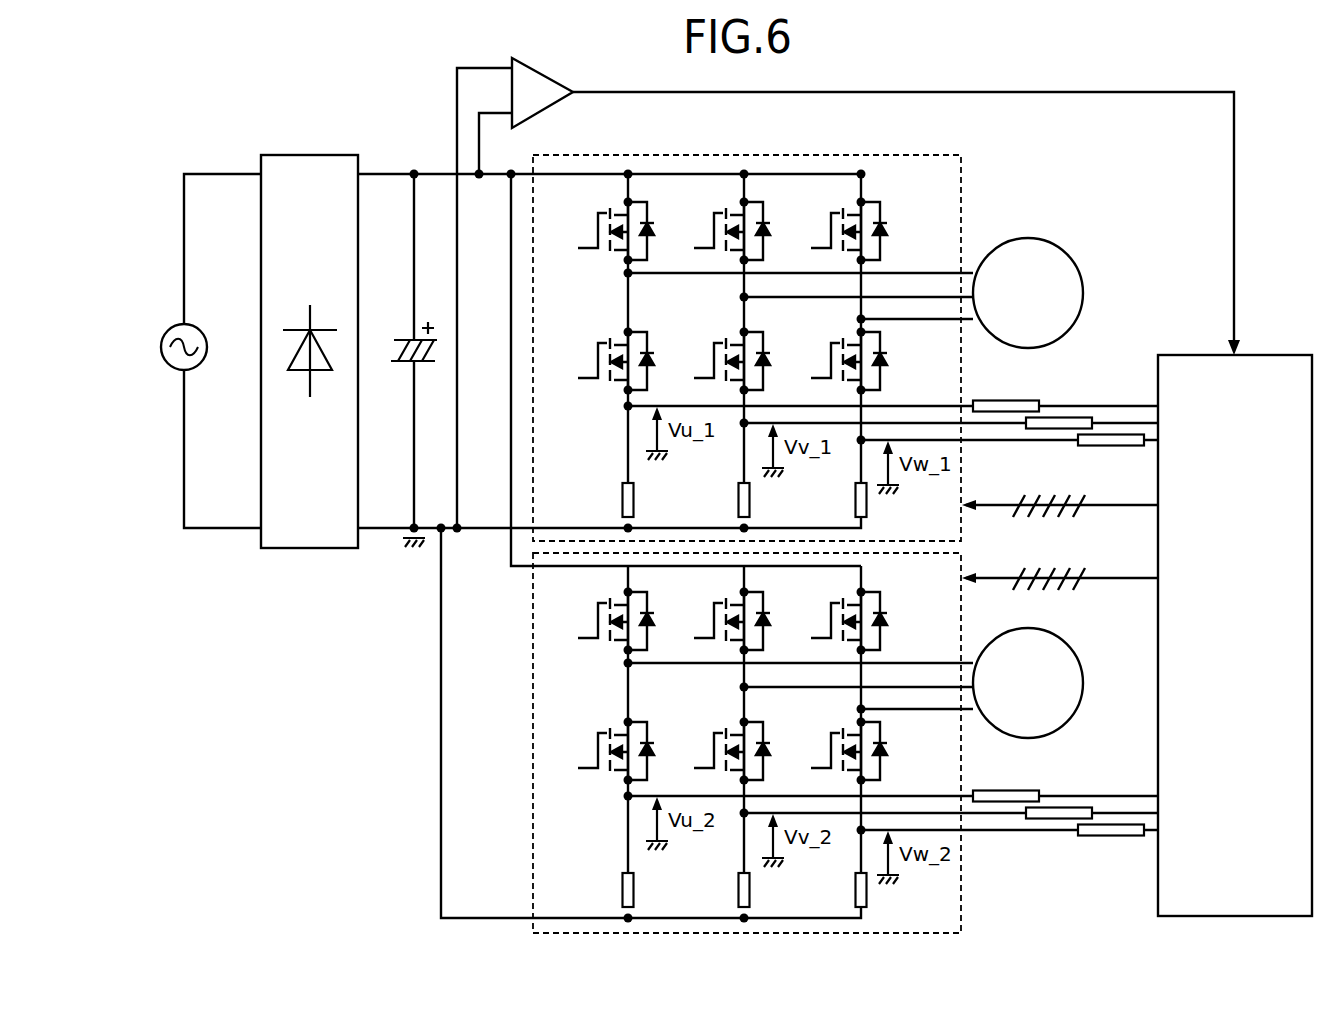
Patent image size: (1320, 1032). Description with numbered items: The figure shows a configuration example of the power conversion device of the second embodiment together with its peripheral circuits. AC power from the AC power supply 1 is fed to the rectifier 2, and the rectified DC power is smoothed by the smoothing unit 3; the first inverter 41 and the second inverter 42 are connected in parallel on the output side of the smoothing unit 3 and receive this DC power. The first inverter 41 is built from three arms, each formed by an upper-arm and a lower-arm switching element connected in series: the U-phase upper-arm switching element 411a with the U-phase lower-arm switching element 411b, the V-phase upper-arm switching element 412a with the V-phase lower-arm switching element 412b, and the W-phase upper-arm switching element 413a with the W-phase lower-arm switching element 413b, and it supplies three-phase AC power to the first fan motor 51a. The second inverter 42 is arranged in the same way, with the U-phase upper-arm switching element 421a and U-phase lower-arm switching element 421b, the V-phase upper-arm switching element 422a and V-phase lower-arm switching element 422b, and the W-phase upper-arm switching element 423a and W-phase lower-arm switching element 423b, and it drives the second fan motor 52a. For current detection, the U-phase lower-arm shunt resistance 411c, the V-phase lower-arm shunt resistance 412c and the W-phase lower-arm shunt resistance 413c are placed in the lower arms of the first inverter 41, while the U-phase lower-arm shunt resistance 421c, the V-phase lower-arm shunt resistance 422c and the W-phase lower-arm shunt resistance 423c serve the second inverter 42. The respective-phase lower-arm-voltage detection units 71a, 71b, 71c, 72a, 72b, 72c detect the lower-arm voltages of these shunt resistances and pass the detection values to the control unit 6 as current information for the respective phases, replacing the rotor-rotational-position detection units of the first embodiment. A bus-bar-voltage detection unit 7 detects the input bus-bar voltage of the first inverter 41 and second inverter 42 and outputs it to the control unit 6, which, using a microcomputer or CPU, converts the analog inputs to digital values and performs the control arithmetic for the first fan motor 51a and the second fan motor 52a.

The AC power supply 1 is at (171, 327).
The rectifier 2 is at (299, 155).
The smoothing unit 3 is at (396, 340).
The control unit 6 is at (1275, 340).
The bus-bar-voltage detection unit 7 is at (536, 76).
The first inverter 41 is at (556, 156).
The second inverter 42 is at (533, 621).
The U-phase upper-arm switching element 411a is at (599, 224).
The V-phase upper-arm switching element 412a is at (715, 224).
The W-phase upper-arm switching element 413a is at (832, 224).
The U-phase lower-arm switching element 411b is at (599, 354).
The V-phase lower-arm switching element 412b is at (715, 354).
The W-phase lower-arm switching element 413b is at (832, 354).
The U-phase lower-arm shunt resistance 411c is at (589, 500).
The V-phase lower-arm shunt resistance 412c is at (705, 500).
The W-phase lower-arm shunt resistance 413c is at (822, 500).
The U-phase upper-arm switching element 421a is at (599, 614).
The V-phase upper-arm switching element 422a is at (715, 614).
The W-phase upper-arm switching element 423a is at (832, 614).
The U-phase lower-arm switching element 421b is at (599, 744).
The V-phase lower-arm switching element 422b is at (715, 744).
The W-phase lower-arm switching element 423b is at (832, 744).
The U-phase lower-arm shunt resistance 421c is at (589, 890).
The V-phase lower-arm shunt resistance 422c is at (705, 890).
The W-phase lower-arm shunt resistance 423c is at (822, 890).
The first fan motor 51a is at (1034, 239).
The second fan motor 52a is at (1034, 629).
The U-phase lower-arm-voltage detection unit 71a is at (994, 378).
The V-phase lower-arm-voltage detection unit 71b is at (1058, 417).
The W-phase lower-arm-voltage detection unit 71c is at (1097, 446).
The U-phase lower-arm-voltage detection unit 72a is at (994, 768).
The V-phase lower-arm-voltage detection unit 72b is at (1058, 807).
The W-phase lower-arm-voltage detection unit 72c is at (1097, 836).